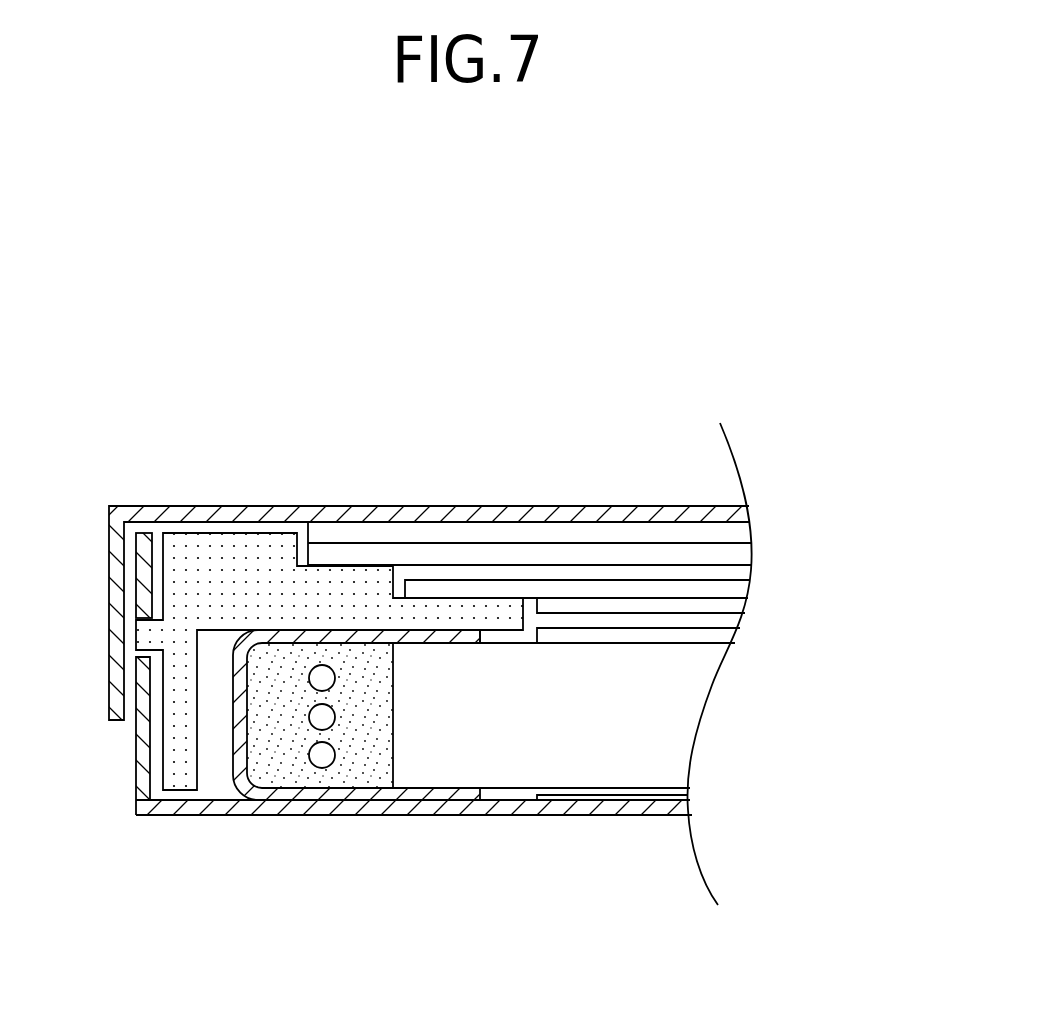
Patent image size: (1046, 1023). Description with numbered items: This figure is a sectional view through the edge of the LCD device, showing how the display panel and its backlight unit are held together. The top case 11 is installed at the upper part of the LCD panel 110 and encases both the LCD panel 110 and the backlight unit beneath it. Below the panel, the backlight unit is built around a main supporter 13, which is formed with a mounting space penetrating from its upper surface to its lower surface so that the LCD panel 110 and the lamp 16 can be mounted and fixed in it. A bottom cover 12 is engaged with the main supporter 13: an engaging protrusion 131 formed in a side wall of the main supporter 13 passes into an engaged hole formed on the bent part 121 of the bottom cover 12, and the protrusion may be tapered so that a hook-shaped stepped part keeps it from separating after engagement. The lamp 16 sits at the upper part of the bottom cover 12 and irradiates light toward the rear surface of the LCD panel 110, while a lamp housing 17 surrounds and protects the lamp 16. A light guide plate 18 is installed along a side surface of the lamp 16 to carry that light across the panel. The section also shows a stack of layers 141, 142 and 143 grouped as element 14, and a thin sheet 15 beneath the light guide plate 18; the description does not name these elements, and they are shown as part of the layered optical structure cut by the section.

The top case 11 is at (313, 520).
The LCD panel 110 is at (570, 535).
The bottom cover 12 is at (523, 813).
The bent part 121 is at (138, 792).
The main supporter 13 is at (250, 555).
The engaging protrusion 131 is at (140, 633).
The display panel 14 is at (650, 620).
The first panel layer 141 is at (735, 588).
The second panel layer 142 is at (737, 606).
The third panel layer 143 is at (730, 640).
The reflective sheet 15 is at (687, 803).
The lamp 16 is at (322, 756).
The lamp housing 17 is at (405, 797).
The light guide plate 18 is at (676, 735).